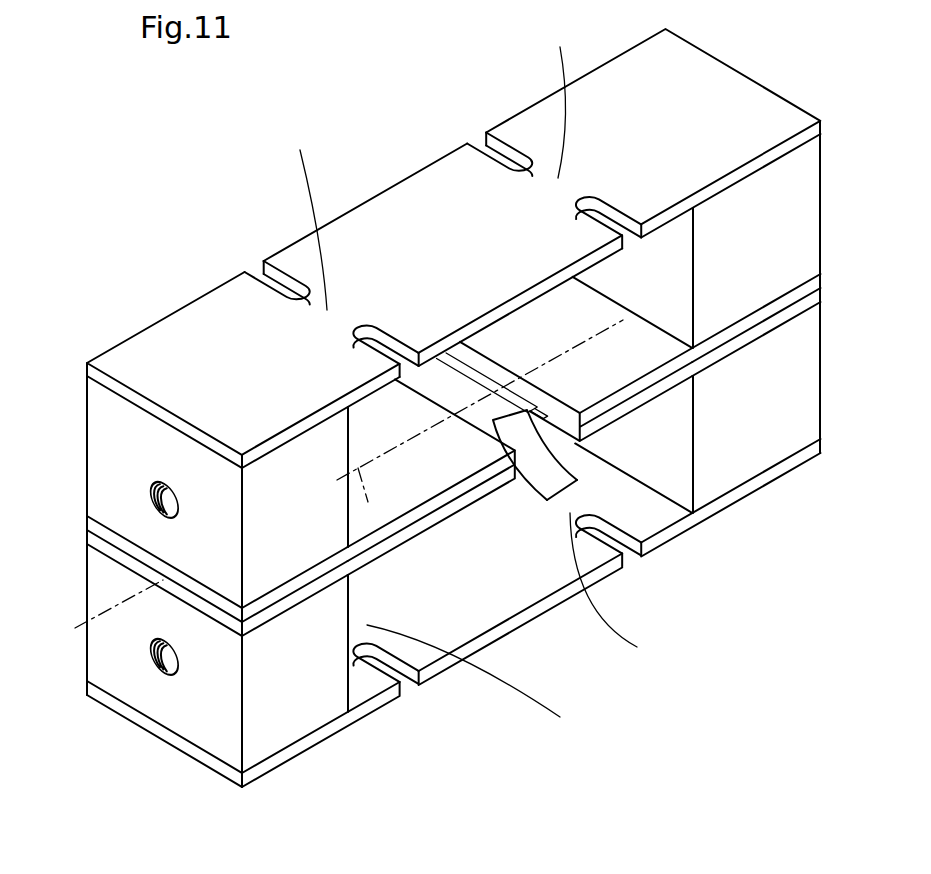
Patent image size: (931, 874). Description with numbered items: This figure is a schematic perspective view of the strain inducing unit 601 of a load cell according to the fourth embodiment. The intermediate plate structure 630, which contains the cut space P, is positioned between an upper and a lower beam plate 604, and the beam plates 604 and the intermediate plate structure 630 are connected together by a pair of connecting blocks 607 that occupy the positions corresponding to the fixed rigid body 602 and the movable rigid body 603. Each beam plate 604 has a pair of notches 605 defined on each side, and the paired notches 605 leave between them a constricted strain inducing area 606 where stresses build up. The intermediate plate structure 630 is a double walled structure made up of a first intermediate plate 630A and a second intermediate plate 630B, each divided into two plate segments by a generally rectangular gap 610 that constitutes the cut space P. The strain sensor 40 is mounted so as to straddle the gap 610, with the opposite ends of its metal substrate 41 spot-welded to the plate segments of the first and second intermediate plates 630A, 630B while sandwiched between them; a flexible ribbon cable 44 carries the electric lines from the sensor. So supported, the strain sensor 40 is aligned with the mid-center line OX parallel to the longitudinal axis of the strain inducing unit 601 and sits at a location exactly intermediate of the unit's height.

The strain inducing unit 601 is at (386, 146).
The fixed rigid body 602 is at (812, 156).
The movable rigid body 603 is at (148, 523).
The beam plate 604 is at (347, 228).
The notch 605 is at (272, 266).
The strain inducing area 606 is at (487, 381).
The connecting block 607 is at (805, 214).
The intermediate plate structure 630 is at (662, 386).
The first intermediate plate 630A is at (663, 352).
The second intermediate plate 630B is at (413, 496).
The strain sensor 40 is at (492, 383).
The substrate 41 is at (483, 393).
The flexible ribbon cable 44 is at (547, 488).
The gap 610 is at (576, 438).